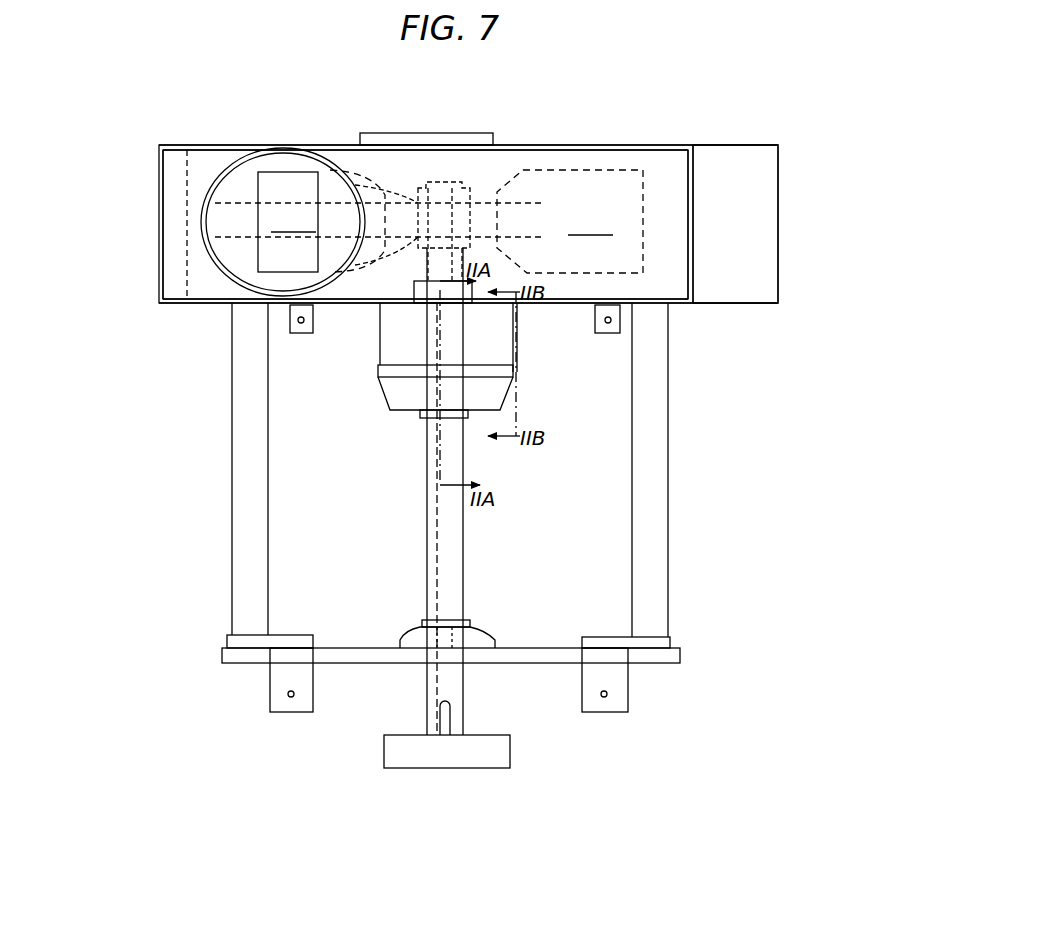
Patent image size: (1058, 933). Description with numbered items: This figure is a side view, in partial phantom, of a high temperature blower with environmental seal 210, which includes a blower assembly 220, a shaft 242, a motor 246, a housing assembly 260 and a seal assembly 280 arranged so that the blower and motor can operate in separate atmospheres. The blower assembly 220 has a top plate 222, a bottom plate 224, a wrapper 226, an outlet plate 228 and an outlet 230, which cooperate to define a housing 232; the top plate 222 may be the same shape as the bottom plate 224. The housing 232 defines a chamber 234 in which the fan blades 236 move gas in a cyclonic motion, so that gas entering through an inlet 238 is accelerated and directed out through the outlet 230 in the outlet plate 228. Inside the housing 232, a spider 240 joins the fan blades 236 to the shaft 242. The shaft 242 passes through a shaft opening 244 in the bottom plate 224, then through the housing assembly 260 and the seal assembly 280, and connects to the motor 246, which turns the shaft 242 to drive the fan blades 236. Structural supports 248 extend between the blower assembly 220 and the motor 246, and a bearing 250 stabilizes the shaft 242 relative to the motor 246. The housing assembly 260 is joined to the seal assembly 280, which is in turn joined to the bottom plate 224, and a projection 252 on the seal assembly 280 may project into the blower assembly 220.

The high temperature blower with environmental seal 210 is at (806, 124).
The blower assembly 220 is at (633, 138).
The top plate 222 is at (587, 140).
The bottom plate 224 is at (697, 306).
The wrapper 226 is at (692, 186).
The outlet plate 228 is at (160, 170).
The outlet 230 is at (242, 196).
The housing 232 is at (539, 137).
The chamber 234 is at (222, 238).
The fan blades 236 is at (429, 221).
The inlet 238 is at (464, 133).
The spider 240 is at (406, 200).
The shaft 242 is at (458, 510).
The shaft opening 244 is at (467, 305).
The motor 246 is at (450, 750).
The structural supports 248 is at (298, 335).
The bearing 250 is at (410, 632).
The projection 252 is at (412, 306).
The housing assembly 260 is at (405, 400).
The seal assembly 280 is at (519, 328).